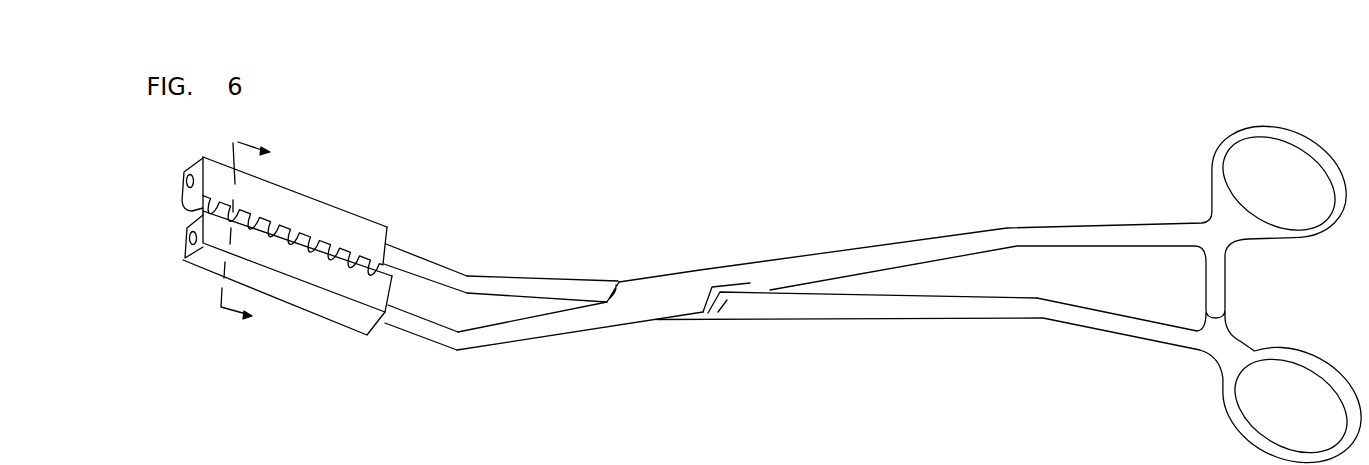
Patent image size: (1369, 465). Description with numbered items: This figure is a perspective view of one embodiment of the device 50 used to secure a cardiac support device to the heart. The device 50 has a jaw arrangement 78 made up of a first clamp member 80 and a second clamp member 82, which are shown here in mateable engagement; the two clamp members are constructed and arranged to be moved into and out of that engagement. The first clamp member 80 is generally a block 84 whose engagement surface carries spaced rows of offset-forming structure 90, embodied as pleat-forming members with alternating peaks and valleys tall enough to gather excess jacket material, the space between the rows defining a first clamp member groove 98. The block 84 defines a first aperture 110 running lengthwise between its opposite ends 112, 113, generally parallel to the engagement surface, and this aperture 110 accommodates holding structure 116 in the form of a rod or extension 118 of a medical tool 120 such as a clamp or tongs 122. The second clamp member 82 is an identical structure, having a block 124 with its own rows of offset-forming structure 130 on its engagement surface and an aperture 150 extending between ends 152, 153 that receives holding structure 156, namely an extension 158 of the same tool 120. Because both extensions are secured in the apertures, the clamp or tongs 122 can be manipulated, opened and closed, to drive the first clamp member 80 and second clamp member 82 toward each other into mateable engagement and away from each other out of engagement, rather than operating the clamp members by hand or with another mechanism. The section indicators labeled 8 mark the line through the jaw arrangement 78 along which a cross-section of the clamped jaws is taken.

The device 50 is at (741, 248).
The jaw arrangement 78 is at (259, 228).
The first clamp member 80 is at (302, 205).
The second clamp member 82 is at (287, 299).
The block 84 is at (357, 217).
The offset-forming structure 90 is at (288, 196).
The first clamp member groove 98 is at (162, 223).
The first aperture 110 is at (192, 171).
The end 112 is at (184, 173).
The end 113 is at (392, 229).
The holding structure 116 is at (501, 247).
The rod or extension 118 is at (502, 277).
The medical tool 120 is at (1140, 81).
The clamp or tongs 122 is at (636, 205).
The block 124 is at (352, 318).
The offset-forming structure 130 is at (283, 258).
The aperture 150 is at (186, 256).
The end 152 is at (186, 233).
The end 153 is at (390, 294).
The holding structure 156 is at (543, 352).
The extension 158 is at (495, 337).
The section line 8- 8 is at (231, 222).